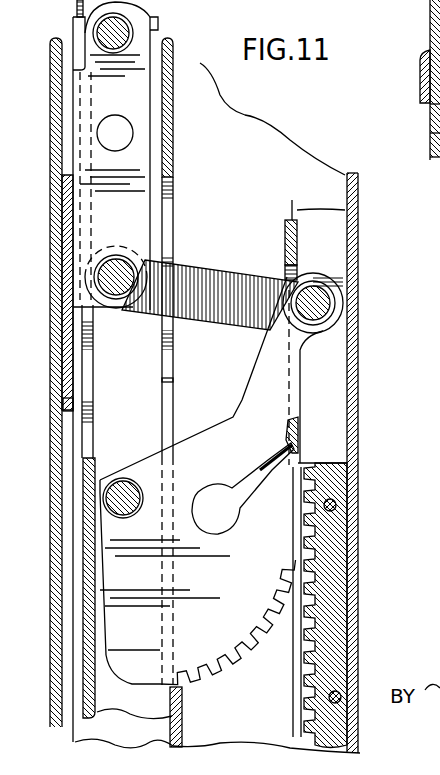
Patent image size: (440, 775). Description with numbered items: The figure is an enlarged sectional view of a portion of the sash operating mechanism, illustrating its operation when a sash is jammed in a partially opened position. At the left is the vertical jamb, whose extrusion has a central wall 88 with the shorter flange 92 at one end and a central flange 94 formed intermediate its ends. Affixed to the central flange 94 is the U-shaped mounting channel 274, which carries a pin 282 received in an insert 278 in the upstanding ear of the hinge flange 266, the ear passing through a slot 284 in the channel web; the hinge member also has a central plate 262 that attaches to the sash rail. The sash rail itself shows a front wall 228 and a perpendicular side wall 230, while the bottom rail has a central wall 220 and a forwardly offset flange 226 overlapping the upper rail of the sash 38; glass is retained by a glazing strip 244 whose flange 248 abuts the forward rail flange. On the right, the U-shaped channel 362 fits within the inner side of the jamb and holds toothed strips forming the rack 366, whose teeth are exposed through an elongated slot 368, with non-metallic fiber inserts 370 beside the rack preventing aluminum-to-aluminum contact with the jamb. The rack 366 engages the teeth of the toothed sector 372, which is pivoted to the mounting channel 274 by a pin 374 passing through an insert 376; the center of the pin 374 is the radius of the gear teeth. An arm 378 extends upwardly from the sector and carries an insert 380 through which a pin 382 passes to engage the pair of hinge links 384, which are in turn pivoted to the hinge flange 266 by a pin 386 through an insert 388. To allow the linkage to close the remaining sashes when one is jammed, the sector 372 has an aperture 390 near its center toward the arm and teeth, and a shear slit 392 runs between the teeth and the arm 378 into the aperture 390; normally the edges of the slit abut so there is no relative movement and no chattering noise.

The sash 38 is at (439, 163).
The central wall 88 is at (202, 130).
The flange 92 is at (70, 14).
The central flange 94 is at (173, 72).
The central wall 220 is at (430, 23).
The forwardly offset flange 226 is at (418, 80).
The front wall 228 is at (52, 155).
The side wall 230 is at (82, 732).
The glazing strip 244 is at (430, 133).
The flange 248 is at (430, 105).
The central plate 262 is at (64, 192).
The hinge flange 266 is at (128, 157).
The mounting channel 274 is at (83, 642).
The insert 278 is at (133, 30).
The pin 282 is at (98, 33).
The slot 284 is at (72, 413).
The channel 362 is at (290, 229).
The rack 366 is at (333, 643).
The elongated slot 368 is at (300, 675).
The fiber insert 370 is at (360, 587).
The toothed sector 372 is at (240, 589).
The pin 374 is at (123, 518).
The insert 376 is at (123, 480).
The arm 378 is at (280, 393).
The insert 380 is at (340, 282).
The pin 382 is at (275, 280).
The hinge links 384 is at (200, 272).
The pin 386 is at (120, 298).
The insert 388 is at (110, 260).
The aperture 390 is at (222, 505).
The shear slit 392 is at (298, 450).